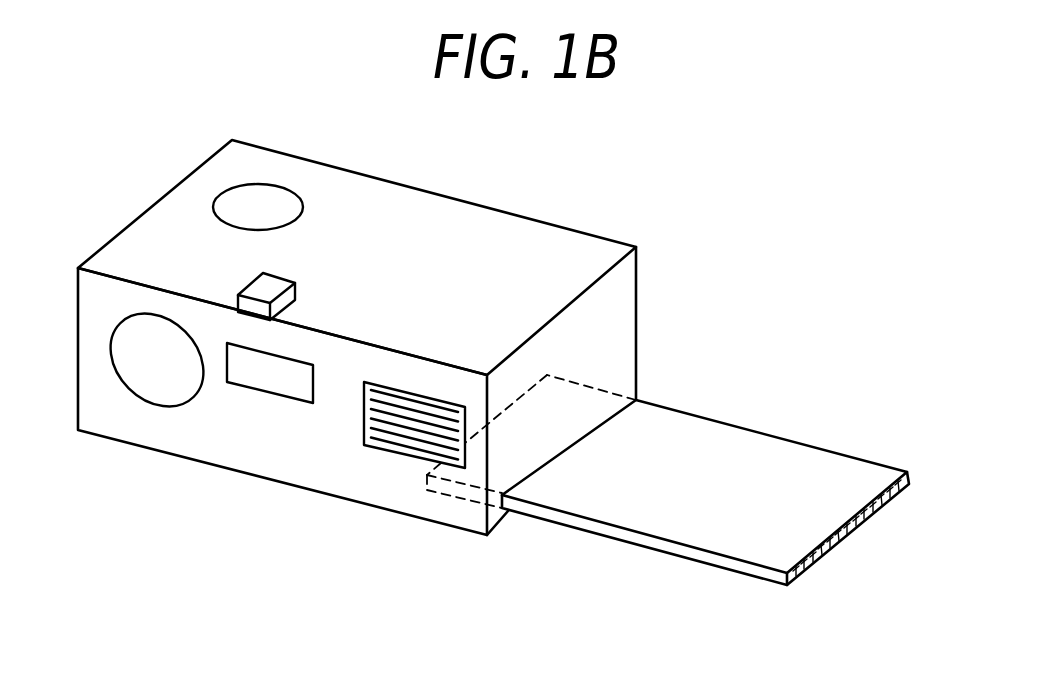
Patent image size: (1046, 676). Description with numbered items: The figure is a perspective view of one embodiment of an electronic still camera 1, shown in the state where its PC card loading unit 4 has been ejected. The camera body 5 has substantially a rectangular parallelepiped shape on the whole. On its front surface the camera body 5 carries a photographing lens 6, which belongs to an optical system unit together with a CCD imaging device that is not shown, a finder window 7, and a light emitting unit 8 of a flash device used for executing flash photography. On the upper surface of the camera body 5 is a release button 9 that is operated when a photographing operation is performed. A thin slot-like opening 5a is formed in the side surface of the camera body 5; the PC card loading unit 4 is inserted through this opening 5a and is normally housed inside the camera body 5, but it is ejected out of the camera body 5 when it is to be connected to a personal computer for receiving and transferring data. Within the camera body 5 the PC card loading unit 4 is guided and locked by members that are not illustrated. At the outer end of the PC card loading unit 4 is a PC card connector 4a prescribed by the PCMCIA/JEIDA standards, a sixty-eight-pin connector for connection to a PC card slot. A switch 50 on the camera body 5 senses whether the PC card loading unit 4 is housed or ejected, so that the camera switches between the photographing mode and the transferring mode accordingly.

The electronic still camera 1 is at (583, 158).
The PC card loading unit 4 is at (742, 440).
The PC card connector 4a is at (907, 472).
The camera body 5 is at (160, 213).
The opening 5a is at (637, 398).
The photographing lens 6 is at (145, 388).
The finder window 7 is at (247, 378).
The light emitting unit 8 is at (415, 452).
The release button 9 is at (233, 190).
The switch 50 is at (278, 282).